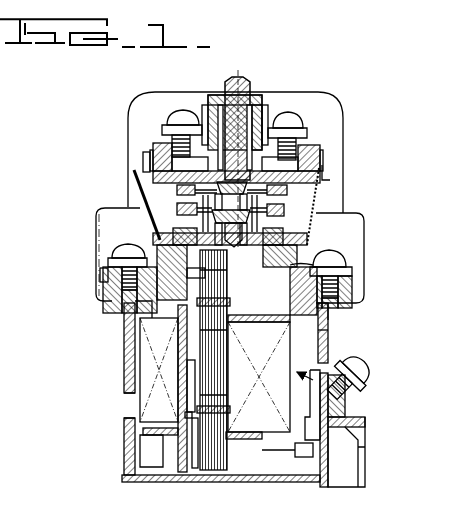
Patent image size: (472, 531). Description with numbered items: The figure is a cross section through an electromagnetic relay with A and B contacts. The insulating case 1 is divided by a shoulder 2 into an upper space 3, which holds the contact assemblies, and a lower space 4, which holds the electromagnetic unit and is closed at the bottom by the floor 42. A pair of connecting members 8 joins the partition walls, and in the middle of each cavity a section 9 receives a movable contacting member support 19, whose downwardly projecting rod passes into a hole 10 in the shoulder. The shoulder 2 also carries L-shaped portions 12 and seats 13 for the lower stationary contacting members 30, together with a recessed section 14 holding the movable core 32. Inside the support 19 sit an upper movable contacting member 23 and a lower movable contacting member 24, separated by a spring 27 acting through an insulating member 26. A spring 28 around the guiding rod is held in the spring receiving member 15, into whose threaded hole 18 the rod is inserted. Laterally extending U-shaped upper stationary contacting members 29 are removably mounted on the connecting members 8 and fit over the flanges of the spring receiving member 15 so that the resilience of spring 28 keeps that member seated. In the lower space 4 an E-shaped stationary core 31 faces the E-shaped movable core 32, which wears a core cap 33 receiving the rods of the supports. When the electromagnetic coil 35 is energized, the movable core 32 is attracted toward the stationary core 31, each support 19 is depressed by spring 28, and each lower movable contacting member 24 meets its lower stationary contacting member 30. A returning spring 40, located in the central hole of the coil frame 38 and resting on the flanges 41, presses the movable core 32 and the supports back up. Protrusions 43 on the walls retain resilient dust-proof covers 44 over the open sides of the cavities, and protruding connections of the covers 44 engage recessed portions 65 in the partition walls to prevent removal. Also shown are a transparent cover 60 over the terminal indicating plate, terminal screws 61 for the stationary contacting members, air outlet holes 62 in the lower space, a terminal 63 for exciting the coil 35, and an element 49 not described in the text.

The case 1 is at (352, 98).
The shoulder 2 is at (150, 233).
The upper space 3 is at (330, 128).
The lower space 4 is at (359, 400).
The connecting members 8 is at (156, 146).
The section for receiving a movable contacting member support 9 is at (219, 158).
The hole 10 is at (333, 262).
The L-shaped portions 12 is at (112, 253).
The seats 13 is at (105, 292).
The recessed section 14 is at (329, 333).
The spring receiving member 15 is at (278, 124).
The threaded hole 18 is at (242, 96).
The movable contacting member support 19 is at (147, 163).
The upper movable contacting member 23 is at (286, 209).
The lower movable contacting member 24 is at (304, 248).
The insulating member 26 is at (177, 191).
The spring 27 is at (205, 170).
The spring 28 is at (266, 120).
The upper stationary contacting members 29 is at (163, 141).
The lower stationary contacting member 30 is at (104, 275).
The stationary core 31 is at (200, 457).
The movable core 32 is at (127, 313).
The core cap 33 is at (326, 320).
The electromagnetic coil 35 is at (150, 380).
The coil frame 38 is at (178, 342).
The returning spring 40 is at (185, 417).
The flanges 41 is at (193, 444).
The floor 42 is at (206, 483).
The protrusion 43 is at (330, 175).
The dust-proof covers 44 is at (285, 206).
The spring washer 49 is at (125, 246).
The transparent cover 60 is at (254, 106).
The terminal screw 61 is at (183, 113).
The holes for air outlet 62 is at (128, 403).
The terminal 63 is at (366, 382).
The recessed portions 65 is at (320, 180).